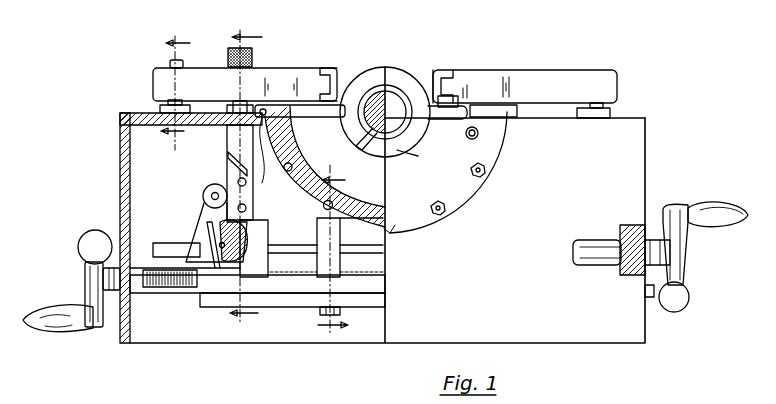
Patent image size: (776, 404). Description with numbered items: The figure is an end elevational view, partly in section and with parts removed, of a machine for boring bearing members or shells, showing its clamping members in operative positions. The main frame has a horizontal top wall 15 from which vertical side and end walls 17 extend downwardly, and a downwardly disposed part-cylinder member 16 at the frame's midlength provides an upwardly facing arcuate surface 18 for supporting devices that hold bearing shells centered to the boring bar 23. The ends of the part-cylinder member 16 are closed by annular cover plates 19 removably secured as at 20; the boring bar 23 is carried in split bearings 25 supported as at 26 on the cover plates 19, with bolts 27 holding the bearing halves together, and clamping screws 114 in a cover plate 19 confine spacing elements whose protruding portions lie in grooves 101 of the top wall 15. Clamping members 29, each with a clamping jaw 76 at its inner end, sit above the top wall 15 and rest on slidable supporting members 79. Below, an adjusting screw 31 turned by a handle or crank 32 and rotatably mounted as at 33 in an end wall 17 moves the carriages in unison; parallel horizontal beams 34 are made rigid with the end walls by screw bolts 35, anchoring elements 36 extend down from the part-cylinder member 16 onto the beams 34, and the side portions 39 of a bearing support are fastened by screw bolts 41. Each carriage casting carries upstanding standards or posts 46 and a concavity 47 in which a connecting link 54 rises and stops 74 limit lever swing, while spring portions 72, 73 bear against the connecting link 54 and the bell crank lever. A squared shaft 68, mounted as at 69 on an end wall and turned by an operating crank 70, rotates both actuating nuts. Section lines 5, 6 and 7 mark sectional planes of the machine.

The knurled adjusting knob / section line 5 is at (242, 176).
The locking bolt / section line 6 is at (173, 87).
The section line 7 is at (333, 254).
The horizontal top wall 15 is at (618, 118).
The part-cylinder member 16 is at (338, 196).
The vertical side and end walls 17 is at (121, 185).
The upwardly facing arcuate surface 18 is at (378, 206).
The annular cover plate 19 is at (476, 198).
The securing means for cover plates 20 is at (485, 175).
The boring bar 23 is at (379, 93).
The bearing 25 is at (415, 134).
The bearing support 26 is at (396, 155).
The bolt 27 is at (447, 102).
The clamping member 29 is at (565, 82).
The adjusting screw 31 is at (170, 289).
The handle or crank 32 is at (40, 330).
The rotatable mounting 33 is at (185, 256).
The horizontal beam 34 is at (274, 294).
The screw bolt 35 is at (650, 298).
The anchoring element 36 is at (320, 231).
The longitudinally extending side portion of bearing support 39 is at (338, 300).
The screw bolt 41 is at (320, 312).
The upstanding standard or post 46 is at (204, 196).
The concavity 47 is at (232, 286).
The connecting link 54 is at (228, 136).
The squared shaft 68 is at (376, 258).
The shaft mounting 69 is at (630, 233).
The operating handle or crank 70 is at (716, 226).
The spring portion 72 is at (230, 160).
The spring portion 73 is at (220, 184).
The stop 74 is at (222, 259).
The clamping jaw 76 is at (434, 78).
The supporting member 79 is at (162, 107).
The groove 101 is at (279, 155).
The clamping screw 114 is at (479, 136).